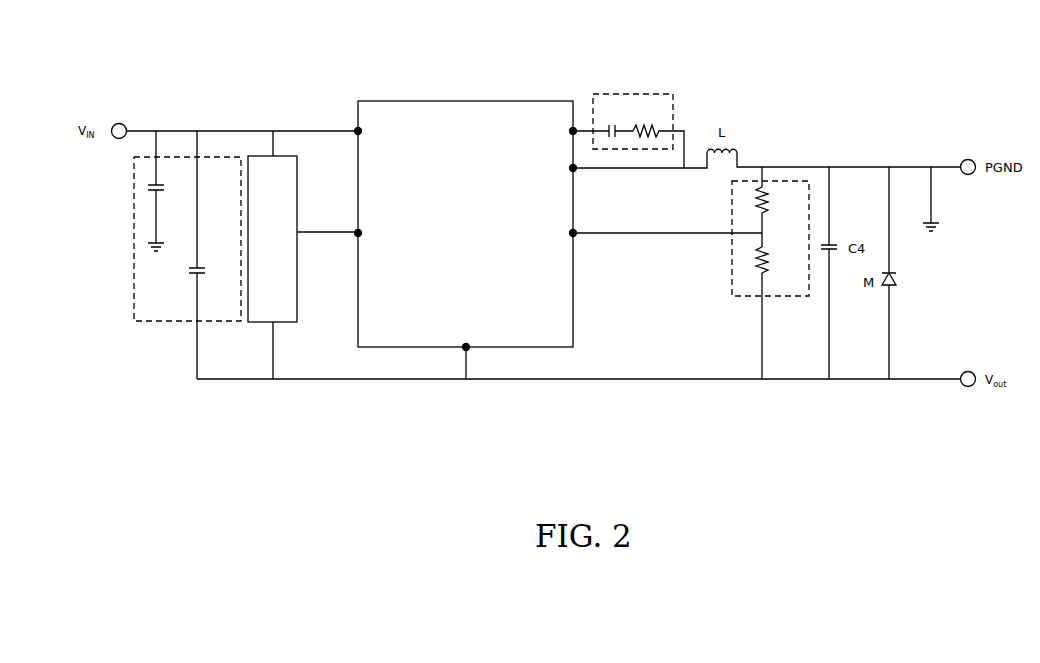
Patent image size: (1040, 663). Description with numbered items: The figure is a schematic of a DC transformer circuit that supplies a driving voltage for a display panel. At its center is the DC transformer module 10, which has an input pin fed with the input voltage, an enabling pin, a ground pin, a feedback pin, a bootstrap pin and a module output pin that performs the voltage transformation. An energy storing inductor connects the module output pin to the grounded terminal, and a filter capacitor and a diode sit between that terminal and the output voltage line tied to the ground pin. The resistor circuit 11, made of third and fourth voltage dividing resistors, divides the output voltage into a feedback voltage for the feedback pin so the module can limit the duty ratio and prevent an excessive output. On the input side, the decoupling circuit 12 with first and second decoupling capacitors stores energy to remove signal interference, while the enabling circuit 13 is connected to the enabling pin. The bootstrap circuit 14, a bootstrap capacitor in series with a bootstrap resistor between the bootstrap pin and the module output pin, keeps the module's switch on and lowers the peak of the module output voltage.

The DC transformer module 10 is at (522, 101).
The resistor circuit 11 is at (748, 297).
The decoupling circuit 12 is at (170, 322).
The enabling circuit 13 is at (266, 322).
The bootstrap circuit 14 is at (646, 94).